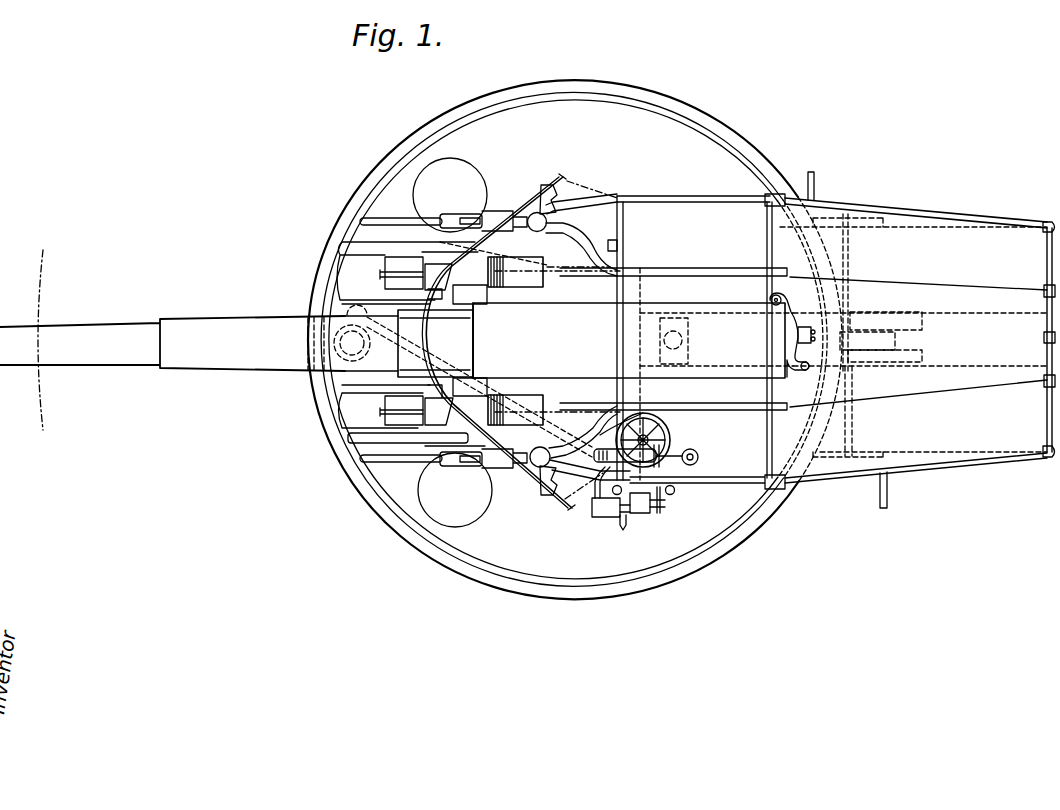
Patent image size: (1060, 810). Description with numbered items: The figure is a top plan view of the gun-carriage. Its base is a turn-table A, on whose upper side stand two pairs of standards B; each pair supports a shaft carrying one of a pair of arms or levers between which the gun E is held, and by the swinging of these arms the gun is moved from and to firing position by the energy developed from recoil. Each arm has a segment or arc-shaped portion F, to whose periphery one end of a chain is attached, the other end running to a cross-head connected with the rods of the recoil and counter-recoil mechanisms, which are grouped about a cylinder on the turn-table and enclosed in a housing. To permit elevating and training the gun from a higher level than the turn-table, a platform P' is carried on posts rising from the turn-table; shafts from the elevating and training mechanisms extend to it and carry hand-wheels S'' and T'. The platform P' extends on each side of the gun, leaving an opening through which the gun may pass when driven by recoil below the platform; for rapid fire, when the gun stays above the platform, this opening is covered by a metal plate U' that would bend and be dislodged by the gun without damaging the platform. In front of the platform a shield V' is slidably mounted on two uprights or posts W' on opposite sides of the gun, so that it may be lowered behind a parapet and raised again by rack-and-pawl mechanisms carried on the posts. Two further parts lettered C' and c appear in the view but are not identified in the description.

The turn-table A is at (575, 339).
The gun E is at (199, 338).
The shield V' is at (519, 330).
The uprights or posts W' is at (579, 337).
The standards B is at (493, 213).
The sight sleeve c is at (472, 219).
The segment or arc-shaped portion F is at (456, 344).
The platform P' is at (920, 340).
The cross bar C' is at (918, 354).
The metal plate U' is at (913, 335).
The hand-wheel T' is at (642, 422).
The hand-wheel S'' is at (654, 443).